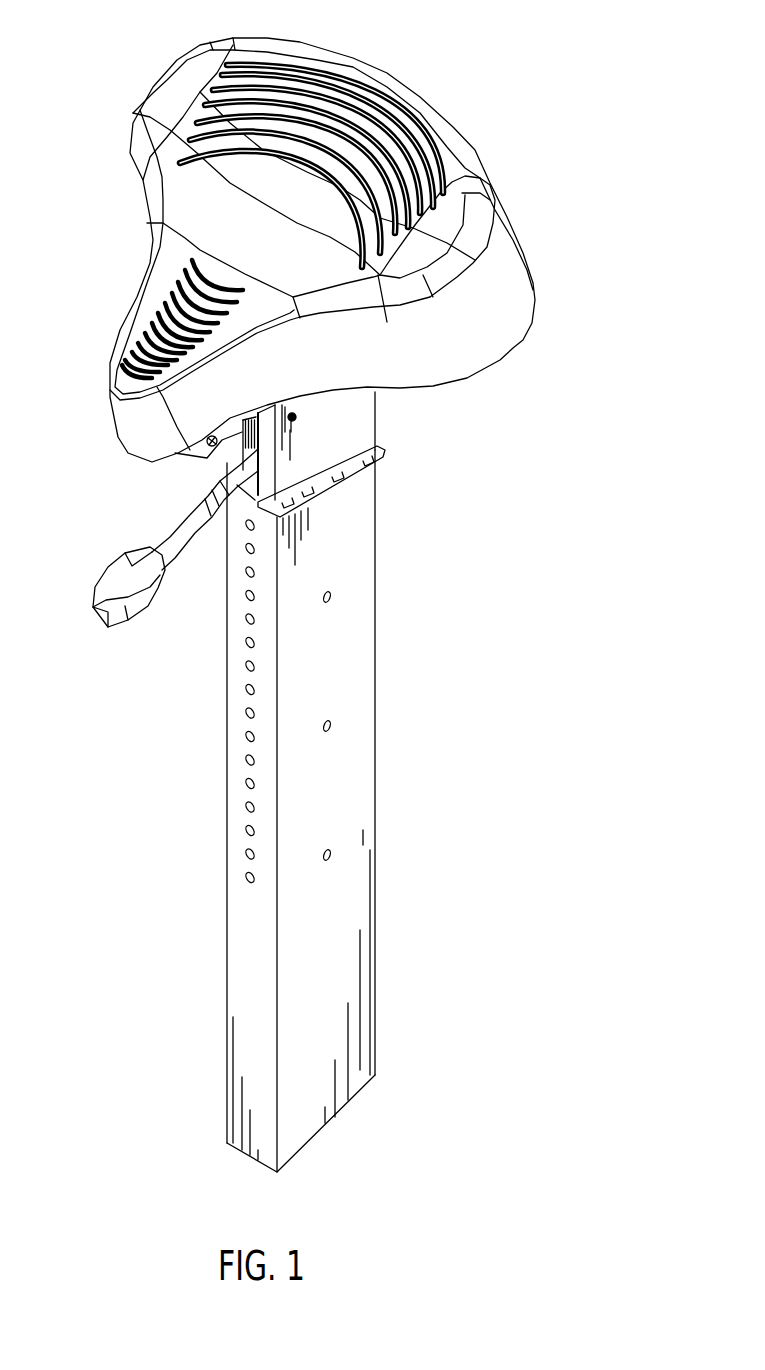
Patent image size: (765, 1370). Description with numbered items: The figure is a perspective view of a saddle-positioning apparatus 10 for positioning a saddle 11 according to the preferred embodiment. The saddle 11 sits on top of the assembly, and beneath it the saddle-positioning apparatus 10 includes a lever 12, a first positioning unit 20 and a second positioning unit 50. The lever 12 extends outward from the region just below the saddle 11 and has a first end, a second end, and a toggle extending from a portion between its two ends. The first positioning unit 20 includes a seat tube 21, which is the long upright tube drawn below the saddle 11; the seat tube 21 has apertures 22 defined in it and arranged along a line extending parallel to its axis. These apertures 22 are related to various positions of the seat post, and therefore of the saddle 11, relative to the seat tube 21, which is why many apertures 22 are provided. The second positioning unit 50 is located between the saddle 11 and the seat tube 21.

The saddle-positioning apparatus 10 is at (575, 146).
The saddle 11 is at (377, 77).
The lever 12 is at (172, 541).
The first positioning unit 20 is at (289, 811).
The seat tube 21 is at (307, 978).
The apertures 22 is at (250, 832).
The second positioning unit 50 is at (420, 428).